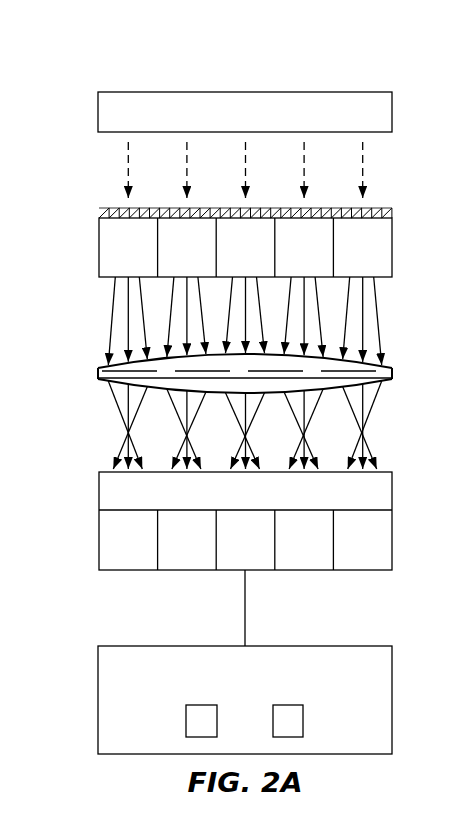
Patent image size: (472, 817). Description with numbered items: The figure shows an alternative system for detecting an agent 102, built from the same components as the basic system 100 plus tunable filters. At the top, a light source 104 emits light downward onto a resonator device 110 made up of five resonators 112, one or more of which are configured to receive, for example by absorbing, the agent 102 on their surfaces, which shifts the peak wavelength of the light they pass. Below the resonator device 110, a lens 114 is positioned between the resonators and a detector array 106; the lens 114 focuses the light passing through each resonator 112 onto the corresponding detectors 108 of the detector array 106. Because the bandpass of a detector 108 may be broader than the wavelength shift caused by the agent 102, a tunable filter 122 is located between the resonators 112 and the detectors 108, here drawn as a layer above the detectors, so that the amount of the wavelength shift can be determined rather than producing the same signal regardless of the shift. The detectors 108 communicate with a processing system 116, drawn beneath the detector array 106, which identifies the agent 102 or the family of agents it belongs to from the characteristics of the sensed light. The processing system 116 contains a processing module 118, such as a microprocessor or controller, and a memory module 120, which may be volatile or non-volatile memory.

The system 100 is at (172, 70).
The light source 104 is at (98, 108).
The agent 102 is at (97, 212).
The resonator device 110 is at (207, 247).
The resonator 112 is at (146, 262).
The lens 114 is at (97, 372).
The detector array 106 is at (204, 521).
The tunable filter 122 is at (108, 492).
The detector 108 is at (146, 555).
The processing system 116 is at (303, 645).
The processing module 118 is at (186, 718).
The memory module 120 is at (303, 722).